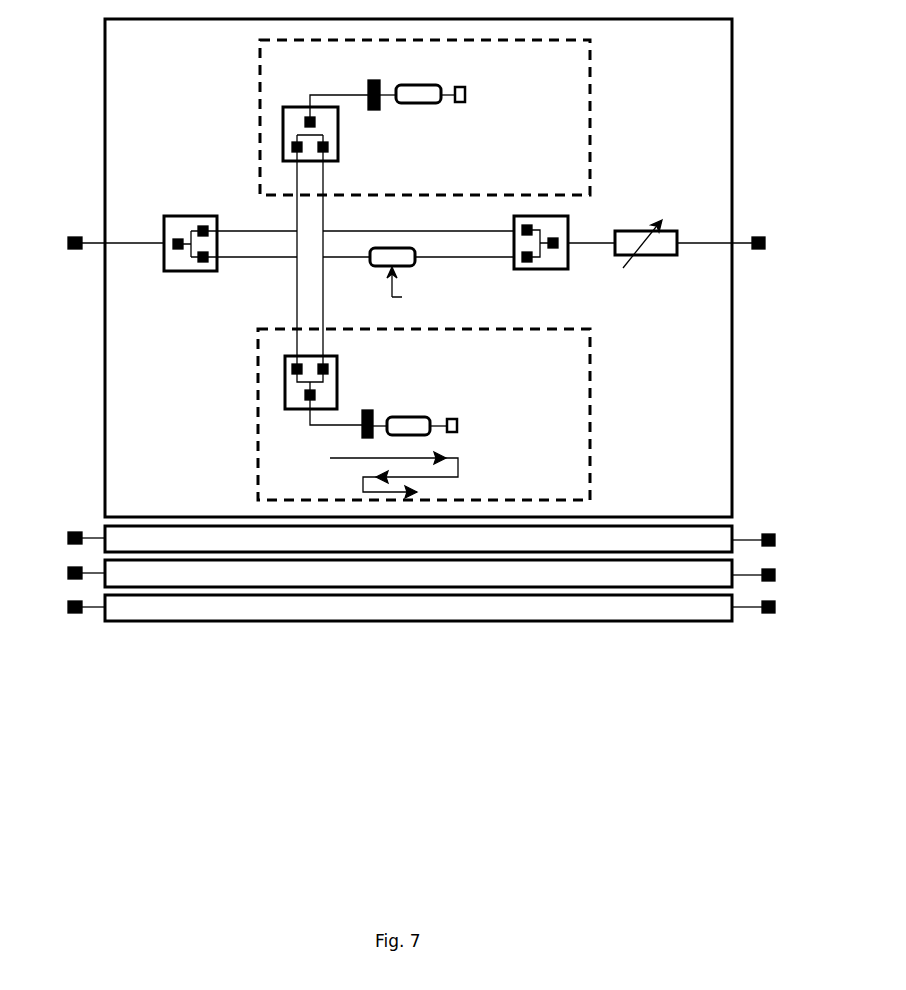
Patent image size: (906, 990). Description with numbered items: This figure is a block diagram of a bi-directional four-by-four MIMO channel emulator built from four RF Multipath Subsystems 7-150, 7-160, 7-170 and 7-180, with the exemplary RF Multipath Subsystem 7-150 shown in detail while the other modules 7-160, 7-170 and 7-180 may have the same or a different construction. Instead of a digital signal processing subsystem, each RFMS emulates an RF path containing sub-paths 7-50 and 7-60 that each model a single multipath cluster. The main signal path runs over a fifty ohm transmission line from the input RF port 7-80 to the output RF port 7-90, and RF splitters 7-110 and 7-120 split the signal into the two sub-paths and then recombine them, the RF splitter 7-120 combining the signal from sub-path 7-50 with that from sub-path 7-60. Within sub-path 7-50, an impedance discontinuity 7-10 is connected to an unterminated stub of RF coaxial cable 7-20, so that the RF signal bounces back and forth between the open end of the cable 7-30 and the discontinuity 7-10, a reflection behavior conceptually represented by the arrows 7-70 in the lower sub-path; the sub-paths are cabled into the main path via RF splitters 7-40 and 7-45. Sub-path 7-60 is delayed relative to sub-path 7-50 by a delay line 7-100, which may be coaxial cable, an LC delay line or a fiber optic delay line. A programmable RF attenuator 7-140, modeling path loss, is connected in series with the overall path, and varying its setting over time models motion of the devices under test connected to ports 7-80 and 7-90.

The impedance discontinuity 7-10 is at (375, 110).
The RF cable stub 7-20 is at (420, 103).
The open end of the cable 7-30 is at (461, 87).
The RF splitter 7-40 is at (283, 138).
The RF splitter 7-45 is at (285, 392).
The sub-path 7-50 is at (260, 77).
The sub-path 7-60 is at (258, 361).
The arrows 7-70 is at (462, 466).
The RF port 7-80 is at (72, 252).
The RF port 7-90 is at (762, 250).
The delay line 7-100 is at (403, 219).
The RF splitter 7-110 is at (222, 270).
The RF splitter 7-120 is at (545, 216).
The programmable RF attenuator 7-140 is at (670, 228).
The RF Multipath Subsystem 7-150 is at (104, 430).
The RF Multipath Subsystem 7-160 is at (100, 527).
The RF Multipath Subsystem 7-170 is at (307, 592).
The RF Multipath Subsystem 7-180 is at (445, 625).